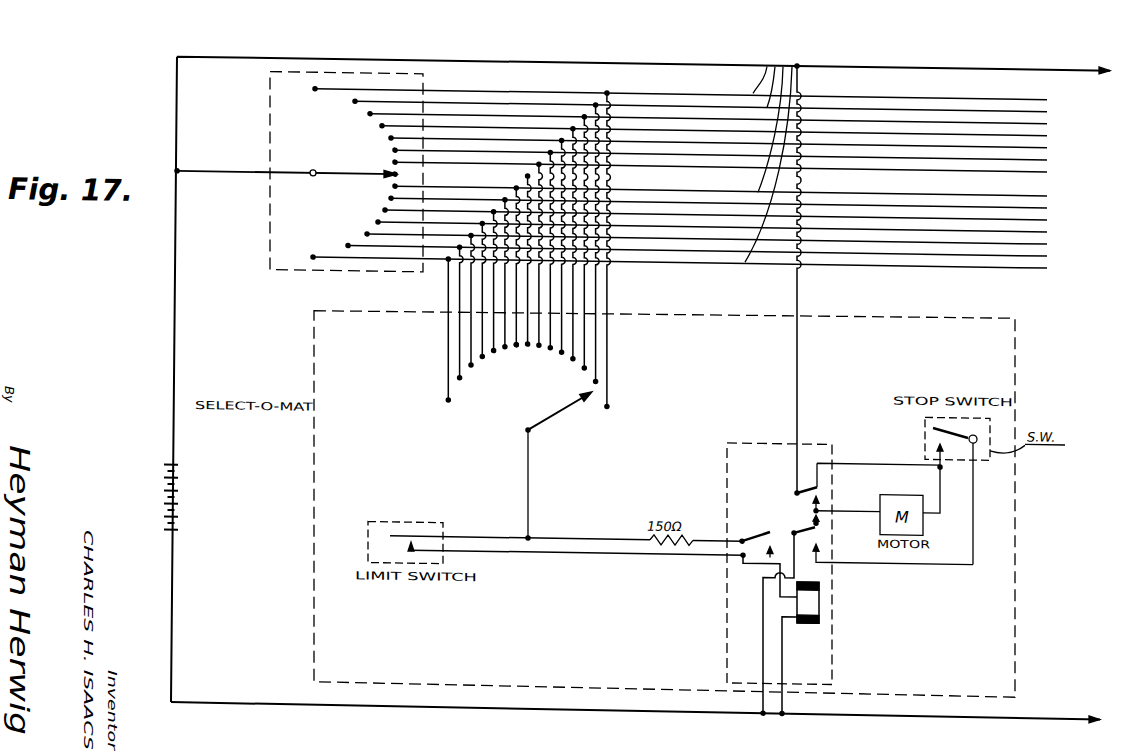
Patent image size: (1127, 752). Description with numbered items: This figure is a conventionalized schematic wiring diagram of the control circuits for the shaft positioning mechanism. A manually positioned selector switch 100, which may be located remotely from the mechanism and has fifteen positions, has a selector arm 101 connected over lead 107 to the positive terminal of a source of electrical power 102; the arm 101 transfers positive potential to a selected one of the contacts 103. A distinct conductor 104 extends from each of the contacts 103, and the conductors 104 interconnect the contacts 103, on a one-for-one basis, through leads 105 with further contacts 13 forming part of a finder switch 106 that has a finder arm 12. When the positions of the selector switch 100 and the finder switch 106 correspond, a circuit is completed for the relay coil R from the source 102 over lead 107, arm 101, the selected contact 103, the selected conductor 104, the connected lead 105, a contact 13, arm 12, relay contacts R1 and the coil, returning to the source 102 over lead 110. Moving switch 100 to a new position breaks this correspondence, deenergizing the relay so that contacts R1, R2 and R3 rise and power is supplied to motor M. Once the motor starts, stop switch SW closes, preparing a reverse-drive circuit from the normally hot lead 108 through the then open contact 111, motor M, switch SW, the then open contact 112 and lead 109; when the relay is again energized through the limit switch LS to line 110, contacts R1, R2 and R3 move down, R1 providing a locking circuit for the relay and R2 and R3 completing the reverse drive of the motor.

The selector switch 100 is at (336, 145).
The selector arm 101 is at (361, 174).
The source of electrical power 102 is at (178, 490).
The contacts 103 is at (392, 143).
The conductors 104 is at (714, 163).
The leads 105 is at (592, 304).
The finder switch 106 is at (548, 397).
The lead 107 is at (553, 55).
The lead 108 is at (798, 284).
The lead 109 is at (817, 576).
The lead 110 is at (598, 701).
The contact 111 is at (816, 492).
The contact 112 is at (818, 540).
The finder arm 12 is at (560, 402).
The contacts 13 is at (516, 337).
The relay contact R1 is at (757, 533).
The relay contact R2 is at (803, 473).
The relay contact R3 is at (815, 515).